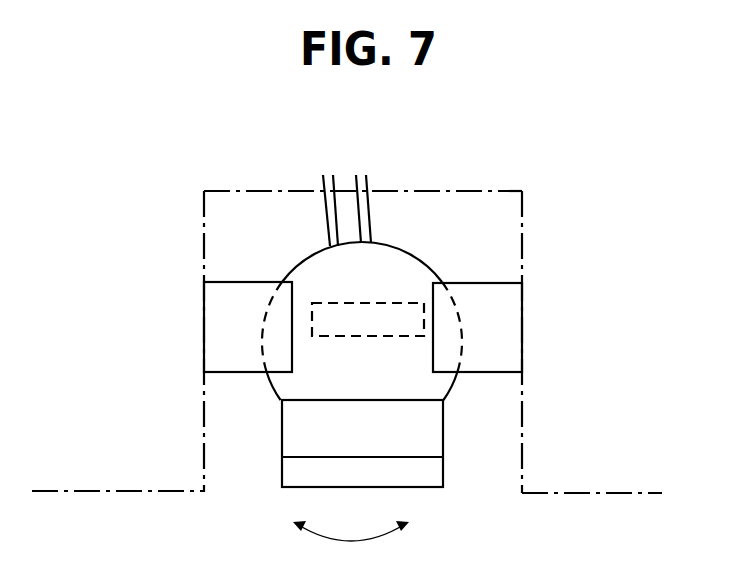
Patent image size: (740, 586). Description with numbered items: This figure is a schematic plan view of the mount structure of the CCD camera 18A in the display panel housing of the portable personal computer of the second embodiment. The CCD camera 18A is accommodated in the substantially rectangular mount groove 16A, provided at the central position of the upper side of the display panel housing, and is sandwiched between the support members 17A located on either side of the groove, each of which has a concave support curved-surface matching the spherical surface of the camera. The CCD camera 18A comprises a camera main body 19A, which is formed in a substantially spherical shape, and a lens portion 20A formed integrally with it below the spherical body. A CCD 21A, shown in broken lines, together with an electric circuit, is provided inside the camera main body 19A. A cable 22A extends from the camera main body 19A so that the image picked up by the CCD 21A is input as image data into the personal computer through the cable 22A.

The mount groove 16A is at (257, 223).
The support member 17A is at (213, 330).
The CCD camera 18A is at (507, 155).
The camera main body 19A is at (403, 265).
The lens portion 20A is at (418, 426).
The CCD 21A is at (383, 315).
The cable 22A is at (366, 185).